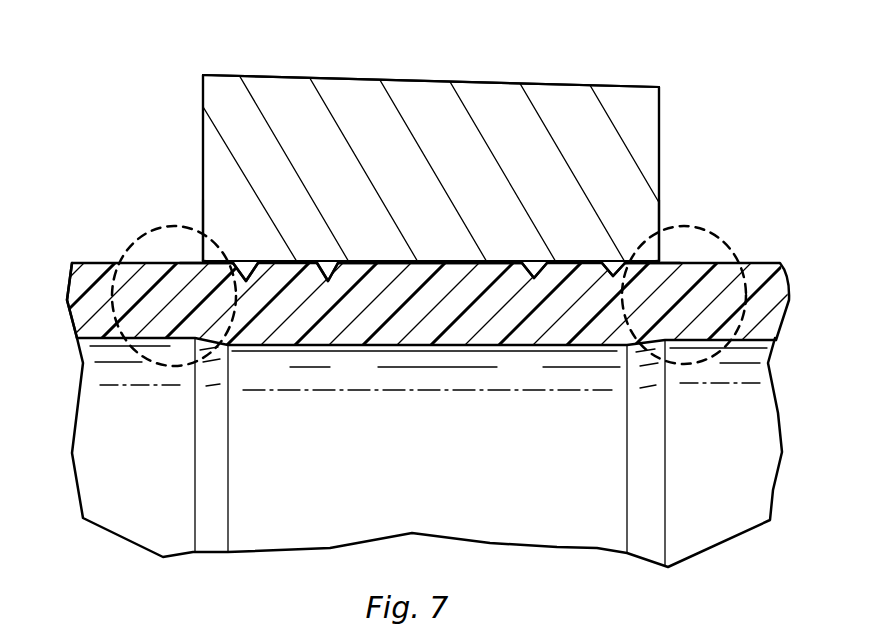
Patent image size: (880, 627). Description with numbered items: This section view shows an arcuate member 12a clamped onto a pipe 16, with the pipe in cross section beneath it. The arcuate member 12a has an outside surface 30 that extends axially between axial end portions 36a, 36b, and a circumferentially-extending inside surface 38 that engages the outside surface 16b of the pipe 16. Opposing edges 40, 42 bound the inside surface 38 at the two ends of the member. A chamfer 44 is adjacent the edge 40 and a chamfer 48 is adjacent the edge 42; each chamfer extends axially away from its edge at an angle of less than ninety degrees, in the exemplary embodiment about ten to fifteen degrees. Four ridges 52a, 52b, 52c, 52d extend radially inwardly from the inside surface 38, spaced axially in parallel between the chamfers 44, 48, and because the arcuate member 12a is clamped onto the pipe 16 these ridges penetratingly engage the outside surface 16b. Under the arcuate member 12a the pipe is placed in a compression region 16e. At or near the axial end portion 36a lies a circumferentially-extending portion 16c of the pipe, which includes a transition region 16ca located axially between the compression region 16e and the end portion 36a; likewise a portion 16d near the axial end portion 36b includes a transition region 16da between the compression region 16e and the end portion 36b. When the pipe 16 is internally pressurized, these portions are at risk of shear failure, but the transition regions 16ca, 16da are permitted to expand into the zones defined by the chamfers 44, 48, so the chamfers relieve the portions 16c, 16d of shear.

The arcuate member 12a is at (464, 80).
The pipe 16 is at (80, 312).
The outside surface 16b is at (97, 262).
The circumferentially-extending portion 16c is at (724, 236).
The circumferentially-extending portion 16d is at (138, 236).
The compression region 16e is at (418, 266).
The transition region 16da is at (213, 263).
The transition region 16ca is at (655, 262).
The outside surface 30 is at (394, 79).
The axial end portion 36a is at (659, 146).
The axial end portion 36b is at (203, 150).
The inside surface 38 is at (583, 262).
The edge 40 is at (645, 262).
The edge 42 is at (168, 264).
The chamfer 44 is at (636, 265).
The chamfer 48 is at (217, 266).
The ridge 52a is at (614, 276).
The ridge 52b is at (534, 278).
The ridge 52c is at (327, 281).
The ridge 52d is at (246, 281).